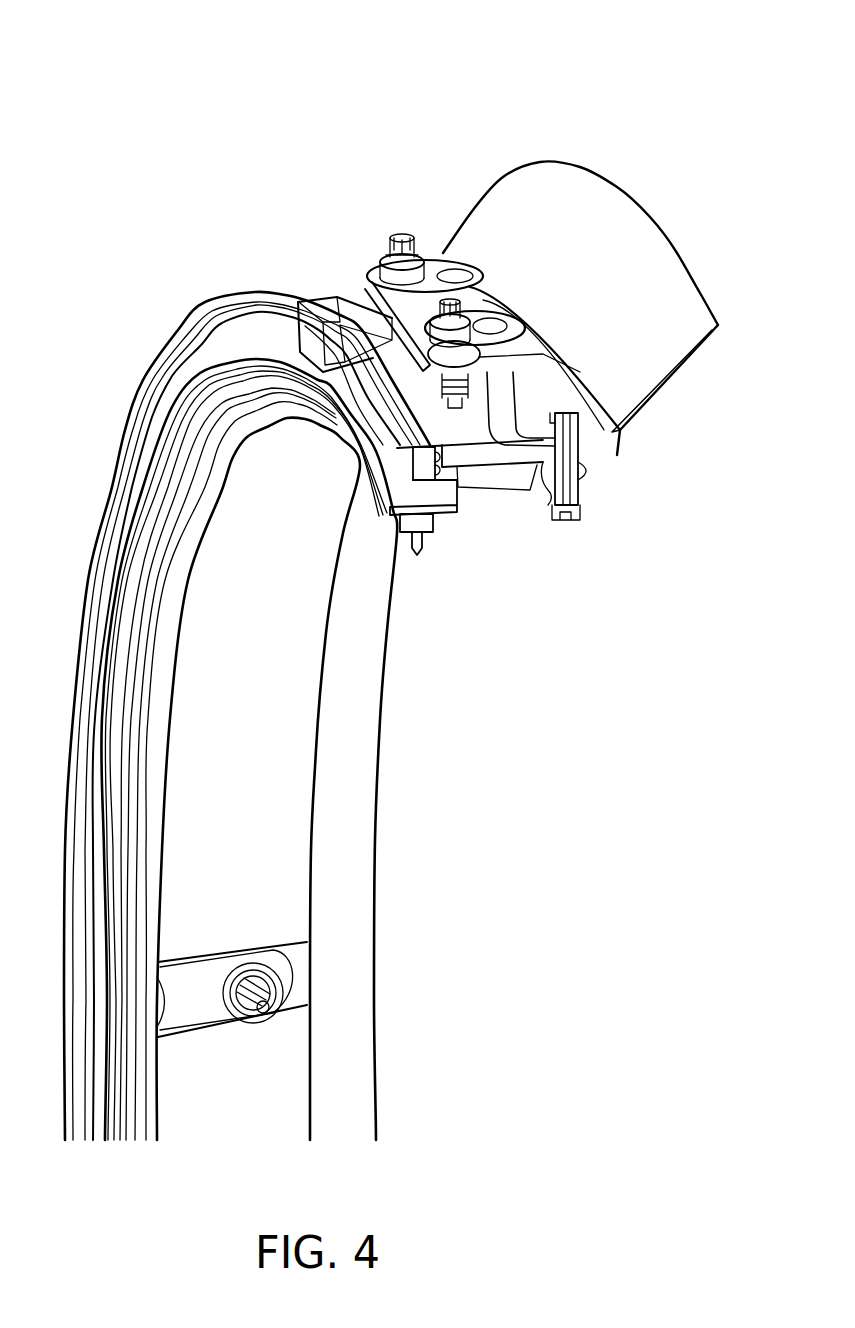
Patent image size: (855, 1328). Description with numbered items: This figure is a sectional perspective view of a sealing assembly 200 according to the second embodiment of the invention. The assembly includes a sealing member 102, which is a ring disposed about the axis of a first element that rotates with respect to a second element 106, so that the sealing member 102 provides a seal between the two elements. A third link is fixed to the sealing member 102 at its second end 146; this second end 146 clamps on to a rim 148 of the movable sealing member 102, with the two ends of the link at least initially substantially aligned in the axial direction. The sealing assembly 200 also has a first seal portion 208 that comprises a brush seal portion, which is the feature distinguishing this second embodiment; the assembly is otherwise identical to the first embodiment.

The sealing assembly 200 is at (155, 114).
The sealing member 102 is at (160, 413).
The second element 106 is at (480, 233).
The second end of the third link 146 is at (336, 320).
The rim of the sealing member 148 is at (205, 300).
The first seal portion 208 is at (430, 523).